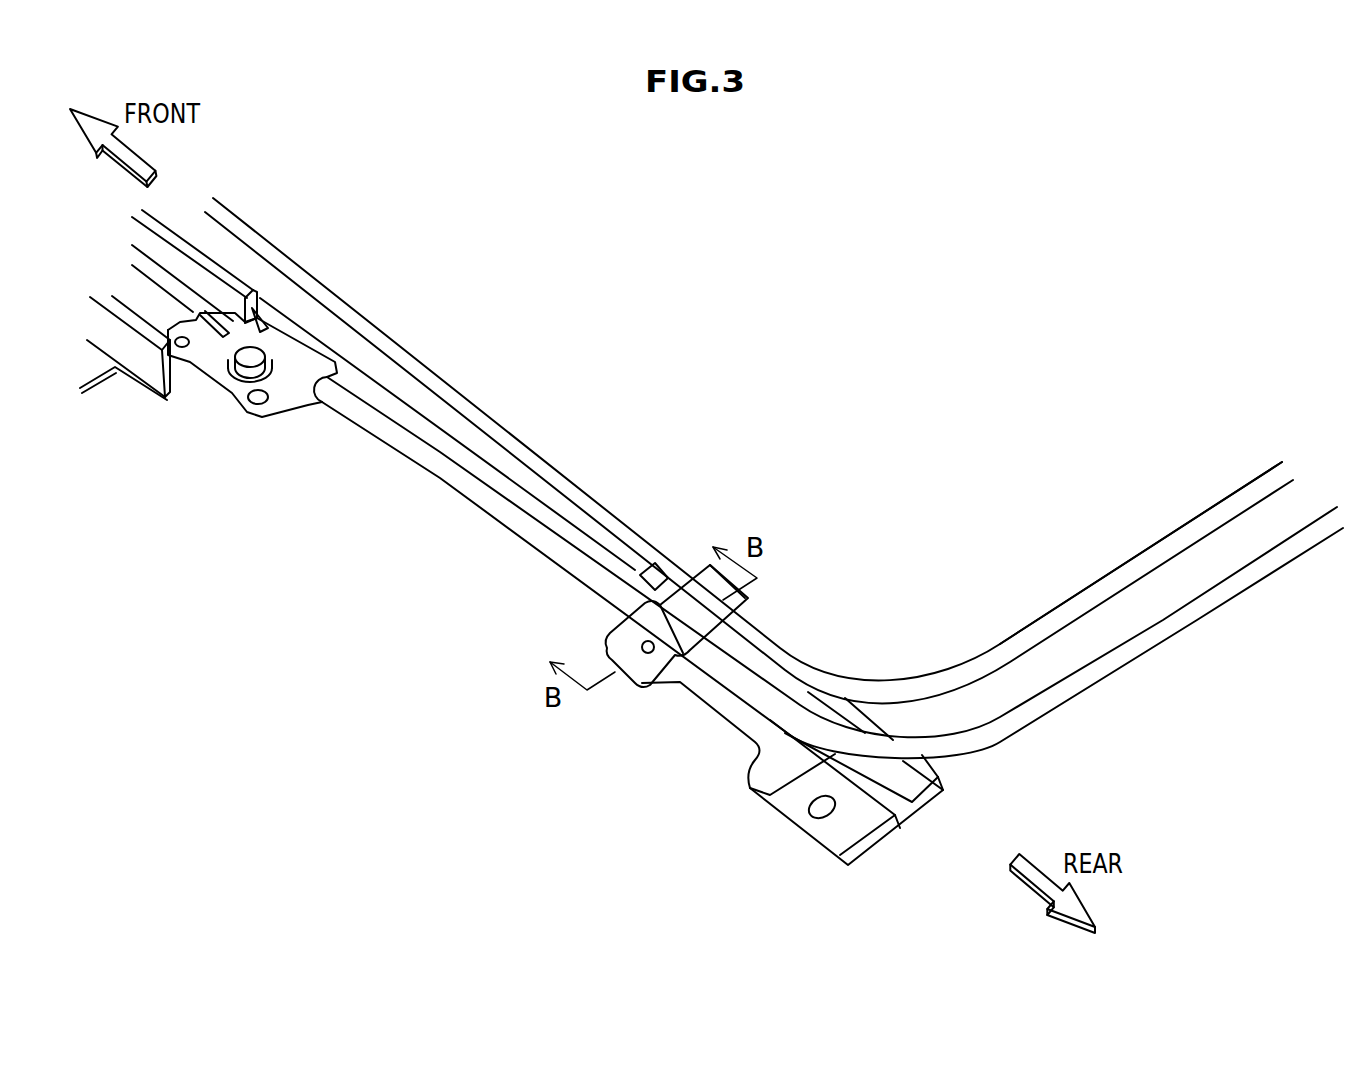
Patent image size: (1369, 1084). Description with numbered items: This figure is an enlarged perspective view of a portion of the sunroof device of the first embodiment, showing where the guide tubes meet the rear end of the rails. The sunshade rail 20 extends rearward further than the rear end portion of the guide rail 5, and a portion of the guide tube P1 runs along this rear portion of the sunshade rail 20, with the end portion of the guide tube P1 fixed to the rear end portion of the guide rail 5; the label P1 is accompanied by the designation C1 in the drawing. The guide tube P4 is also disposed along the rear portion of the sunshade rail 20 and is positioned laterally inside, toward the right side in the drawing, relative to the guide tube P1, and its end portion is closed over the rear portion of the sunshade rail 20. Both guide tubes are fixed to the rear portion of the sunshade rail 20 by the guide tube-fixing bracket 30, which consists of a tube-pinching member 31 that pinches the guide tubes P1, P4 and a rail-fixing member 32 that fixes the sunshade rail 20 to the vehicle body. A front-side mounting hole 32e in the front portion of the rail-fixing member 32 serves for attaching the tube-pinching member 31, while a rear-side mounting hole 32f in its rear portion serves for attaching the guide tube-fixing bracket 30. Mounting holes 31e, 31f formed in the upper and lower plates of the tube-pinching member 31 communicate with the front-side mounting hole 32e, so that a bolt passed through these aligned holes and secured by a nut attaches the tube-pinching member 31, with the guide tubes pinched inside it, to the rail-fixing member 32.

The guide rail 5 is at (143, 368).
The sunshade rail 20 is at (490, 413).
The guide tube-fixing bracket 30 is at (877, 848).
The tube-pinching member 31 is at (678, 669).
The mounting hole 31e is at (600, 708).
The mounting hole 31f is at (600, 708).
The front-side mounting hole 32e is at (648, 655).
The rail-fixing member 32 is at (802, 817).
The rear-side mounting hole 32f is at (823, 815).
The guide tube P4 is at (1152, 553).
The guide tube P1 is at (828, 567).
The cable C1 is at (1190, 617).